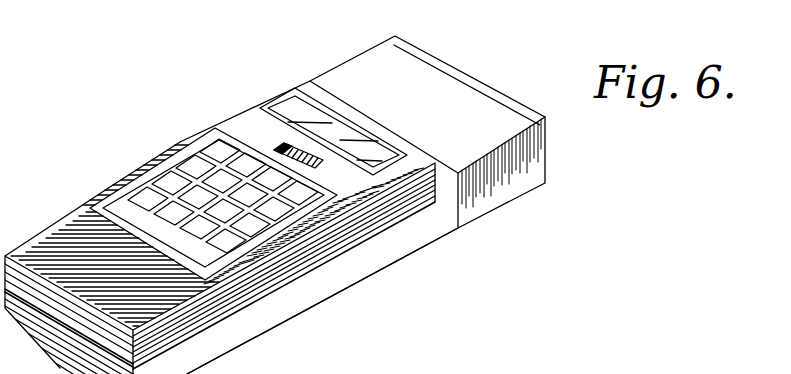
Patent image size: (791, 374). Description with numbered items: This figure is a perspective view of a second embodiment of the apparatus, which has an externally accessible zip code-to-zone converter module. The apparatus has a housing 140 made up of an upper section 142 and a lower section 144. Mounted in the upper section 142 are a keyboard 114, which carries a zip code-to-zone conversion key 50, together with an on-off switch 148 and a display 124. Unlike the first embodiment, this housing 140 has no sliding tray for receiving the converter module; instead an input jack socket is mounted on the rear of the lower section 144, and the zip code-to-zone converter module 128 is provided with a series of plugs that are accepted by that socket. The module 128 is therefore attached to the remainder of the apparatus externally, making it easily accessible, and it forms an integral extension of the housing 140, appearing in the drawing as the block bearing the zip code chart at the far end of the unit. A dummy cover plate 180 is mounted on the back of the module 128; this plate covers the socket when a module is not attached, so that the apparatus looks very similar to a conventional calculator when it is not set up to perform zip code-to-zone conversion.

The housing 140 is at (197, 103).
The upper section 142 is at (88, 199).
The lower section 144 is at (393, 251).
The keyboard 114 is at (170, 180).
The zip code-to-zone conversion key 50 is at (212, 230).
The display 124 is at (290, 110).
The on-off switch 148 is at (324, 162).
The zip code-to-zone converter module 128 is at (347, 63).
The dummy cover plate 180 is at (500, 88).